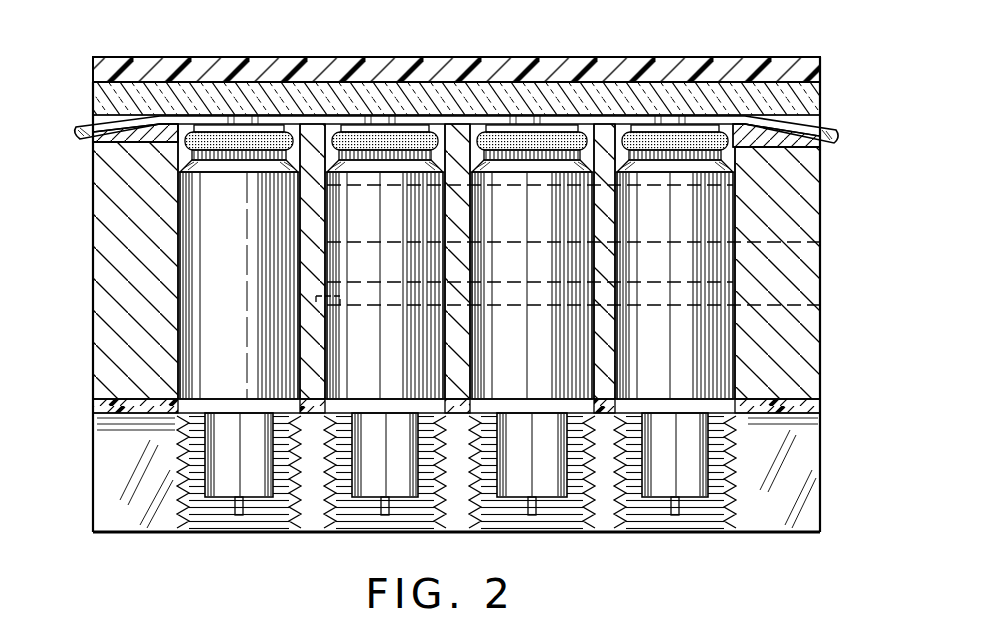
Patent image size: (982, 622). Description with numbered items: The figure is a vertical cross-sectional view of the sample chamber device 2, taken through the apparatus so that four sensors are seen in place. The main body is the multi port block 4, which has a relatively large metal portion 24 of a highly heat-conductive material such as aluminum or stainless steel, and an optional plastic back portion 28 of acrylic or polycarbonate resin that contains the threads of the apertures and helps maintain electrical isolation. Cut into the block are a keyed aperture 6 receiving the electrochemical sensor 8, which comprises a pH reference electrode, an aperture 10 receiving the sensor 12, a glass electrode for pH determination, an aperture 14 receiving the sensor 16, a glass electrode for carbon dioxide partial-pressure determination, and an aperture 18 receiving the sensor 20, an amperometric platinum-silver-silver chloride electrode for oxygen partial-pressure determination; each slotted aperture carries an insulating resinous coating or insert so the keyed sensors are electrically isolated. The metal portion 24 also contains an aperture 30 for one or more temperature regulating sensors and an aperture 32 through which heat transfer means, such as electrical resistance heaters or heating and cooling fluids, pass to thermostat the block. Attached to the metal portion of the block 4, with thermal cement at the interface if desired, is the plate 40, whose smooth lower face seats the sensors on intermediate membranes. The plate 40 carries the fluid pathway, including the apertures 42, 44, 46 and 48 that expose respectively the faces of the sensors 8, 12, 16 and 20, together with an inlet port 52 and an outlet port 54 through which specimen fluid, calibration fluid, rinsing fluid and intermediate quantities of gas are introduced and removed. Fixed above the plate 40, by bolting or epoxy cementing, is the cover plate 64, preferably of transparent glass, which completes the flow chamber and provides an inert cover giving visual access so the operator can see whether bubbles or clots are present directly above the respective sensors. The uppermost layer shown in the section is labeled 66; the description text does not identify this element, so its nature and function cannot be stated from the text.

The sample chamber device 2 is at (823, 170).
The multi port block 4 is at (812, 345).
The keyed aperture 6 is at (186, 310).
The electrochemical sensor 8 is at (180, 365).
The aperture 10 is at (327, 328).
The sensor 12 is at (385, 436).
The aperture 14 is at (472, 330).
The sensor 16 is at (532, 439).
The aperture 18 is at (617, 332).
The sensor 20 is at (675, 440).
The metal portion 24 is at (808, 268).
The plastic back portion 28 is at (808, 434).
The aperture 30 is at (820, 214).
The aperture 32 is at (816, 298).
The plate 40 is at (813, 122).
The aperture 42 is at (243, 120).
The aperture 44 is at (381, 120).
The aperture 46 is at (525, 120).
The aperture 48 is at (668, 120).
The inlet port 52 is at (838, 136).
The outlet port 54 is at (80, 127).
The cover plate 64 is at (808, 100).
The top plate 66 is at (797, 57).